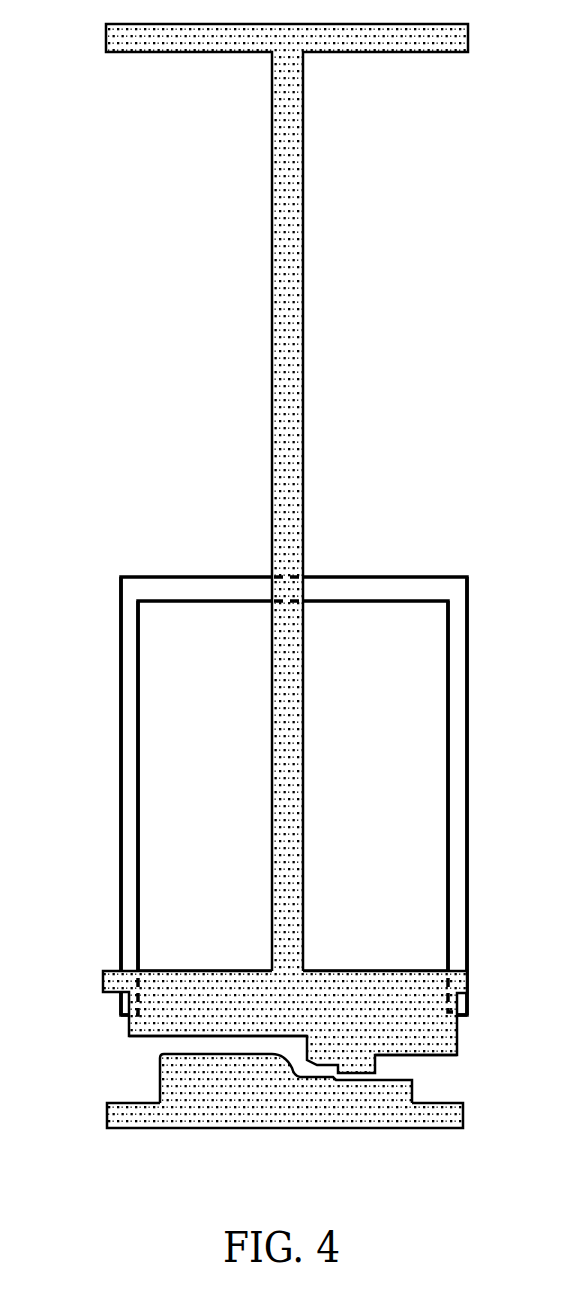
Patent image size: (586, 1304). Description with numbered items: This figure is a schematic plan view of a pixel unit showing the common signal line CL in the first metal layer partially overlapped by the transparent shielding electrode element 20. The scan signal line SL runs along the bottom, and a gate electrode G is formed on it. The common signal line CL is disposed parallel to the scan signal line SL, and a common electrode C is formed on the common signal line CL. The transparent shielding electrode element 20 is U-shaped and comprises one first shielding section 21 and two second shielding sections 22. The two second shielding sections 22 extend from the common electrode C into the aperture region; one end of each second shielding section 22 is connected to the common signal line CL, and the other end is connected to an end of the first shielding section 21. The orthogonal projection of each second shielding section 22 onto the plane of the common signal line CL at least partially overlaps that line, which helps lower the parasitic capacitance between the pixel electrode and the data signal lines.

The transparent shielding electrode element 20 is at (472, 873).
The first shielding section 21 is at (373, 587).
The second shielding sections 22 is at (128, 787).
The common signal line CL is at (110, 983).
The common electrode C is at (162, 1020).
The scan signal line SL is at (112, 1115).
The gate electrode G is at (230, 1077).